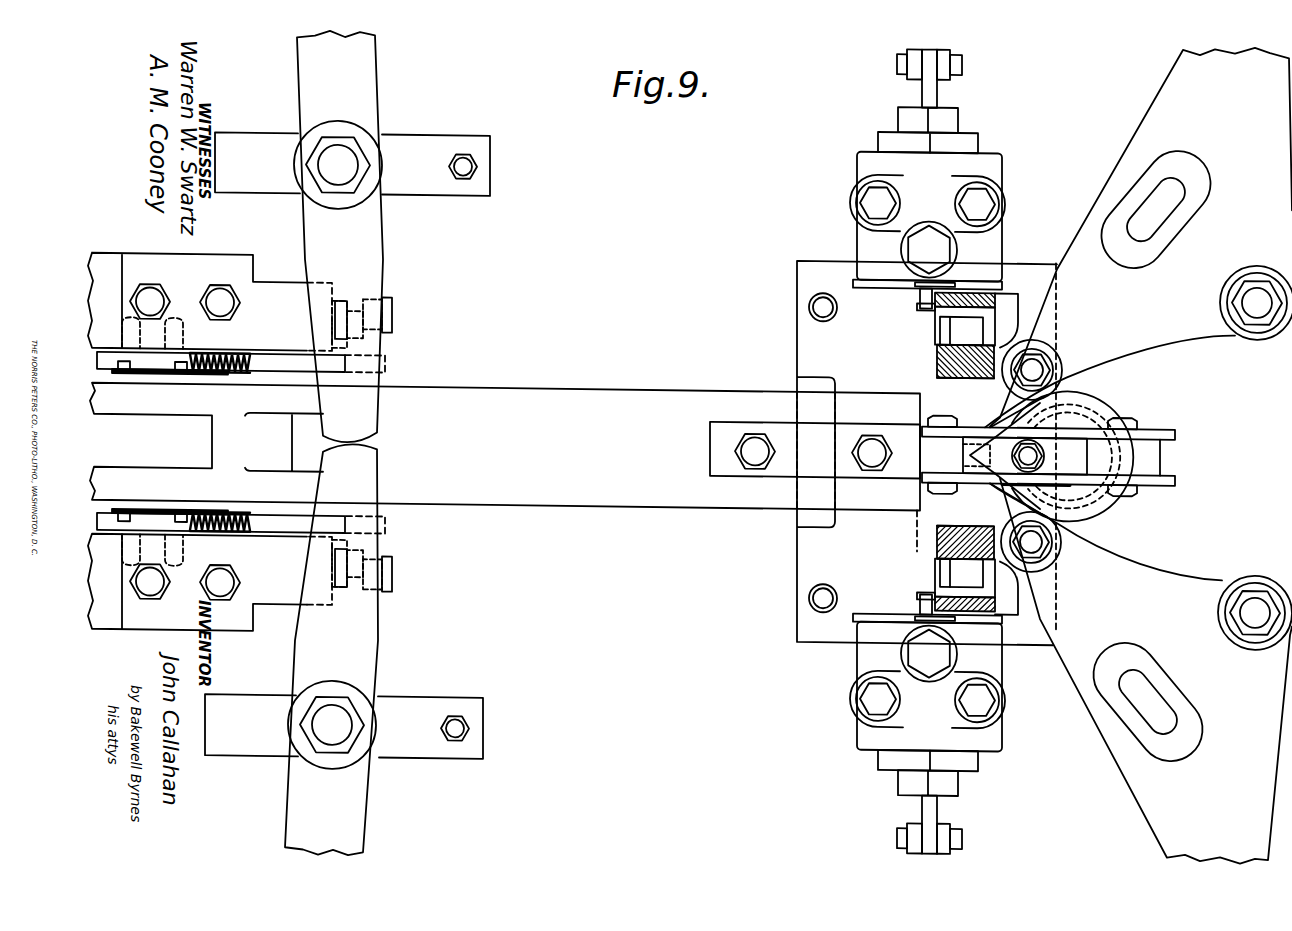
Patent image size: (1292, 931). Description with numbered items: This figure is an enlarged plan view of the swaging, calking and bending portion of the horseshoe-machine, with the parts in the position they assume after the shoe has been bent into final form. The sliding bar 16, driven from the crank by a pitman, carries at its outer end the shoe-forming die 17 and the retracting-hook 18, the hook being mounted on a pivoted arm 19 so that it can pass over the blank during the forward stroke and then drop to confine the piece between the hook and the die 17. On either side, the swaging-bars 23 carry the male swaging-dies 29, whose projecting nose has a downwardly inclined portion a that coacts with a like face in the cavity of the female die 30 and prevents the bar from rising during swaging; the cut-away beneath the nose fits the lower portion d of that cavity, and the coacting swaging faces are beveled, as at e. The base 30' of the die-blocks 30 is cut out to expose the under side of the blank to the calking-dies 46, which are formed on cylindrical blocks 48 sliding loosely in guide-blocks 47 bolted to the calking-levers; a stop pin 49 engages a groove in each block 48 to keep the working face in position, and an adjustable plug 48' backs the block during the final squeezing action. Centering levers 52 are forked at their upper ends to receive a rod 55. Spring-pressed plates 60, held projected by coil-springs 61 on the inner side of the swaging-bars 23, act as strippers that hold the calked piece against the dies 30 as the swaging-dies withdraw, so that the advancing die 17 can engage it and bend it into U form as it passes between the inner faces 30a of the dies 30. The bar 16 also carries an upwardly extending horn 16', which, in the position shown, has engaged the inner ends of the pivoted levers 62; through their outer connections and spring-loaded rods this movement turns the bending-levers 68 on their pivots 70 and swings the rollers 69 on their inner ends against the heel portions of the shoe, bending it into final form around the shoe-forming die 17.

The sliding bar 16 is at (505, 447).
The horn or lug 16' is at (284, 442).
The shoe-forming die 17 is at (1074, 463).
The retracting-hook 18 is at (1088, 456).
The pivoted arm 19 is at (1054, 453).
The swaging-bars 23 is at (210, 449).
The swaging-dies 29 is at (312, 443).
The die 30 is at (945, 451).
The base of the die-blocks 30' is at (909, 451).
The inner faces of the dies 30a is at (964, 452).
The calking-dies 46 is at (902, 451).
The guide-blocks 47 is at (927, 453).
The cylindrical block 48 is at (927, 452).
The adjustable plug 48' is at (908, 451).
The stop pin or screw 49 is at (929, 451).
The levers 52 is at (910, 451).
The rod 55 is at (950, 452).
The spring-pressed plates 60 is at (241, 443).
The coil-spring 61 is at (220, 442).
The levers 62 is at (347, 443).
The bending-levers 68 is at (1138, 454).
The rollers 69 is at (1054, 454).
The pivots 70 is at (1255, 457).
The downwardly-inclined portion a is at (388, 444).
The lower portion of the cavity d is at (965, 452).
The beveled face e is at (316, 440).